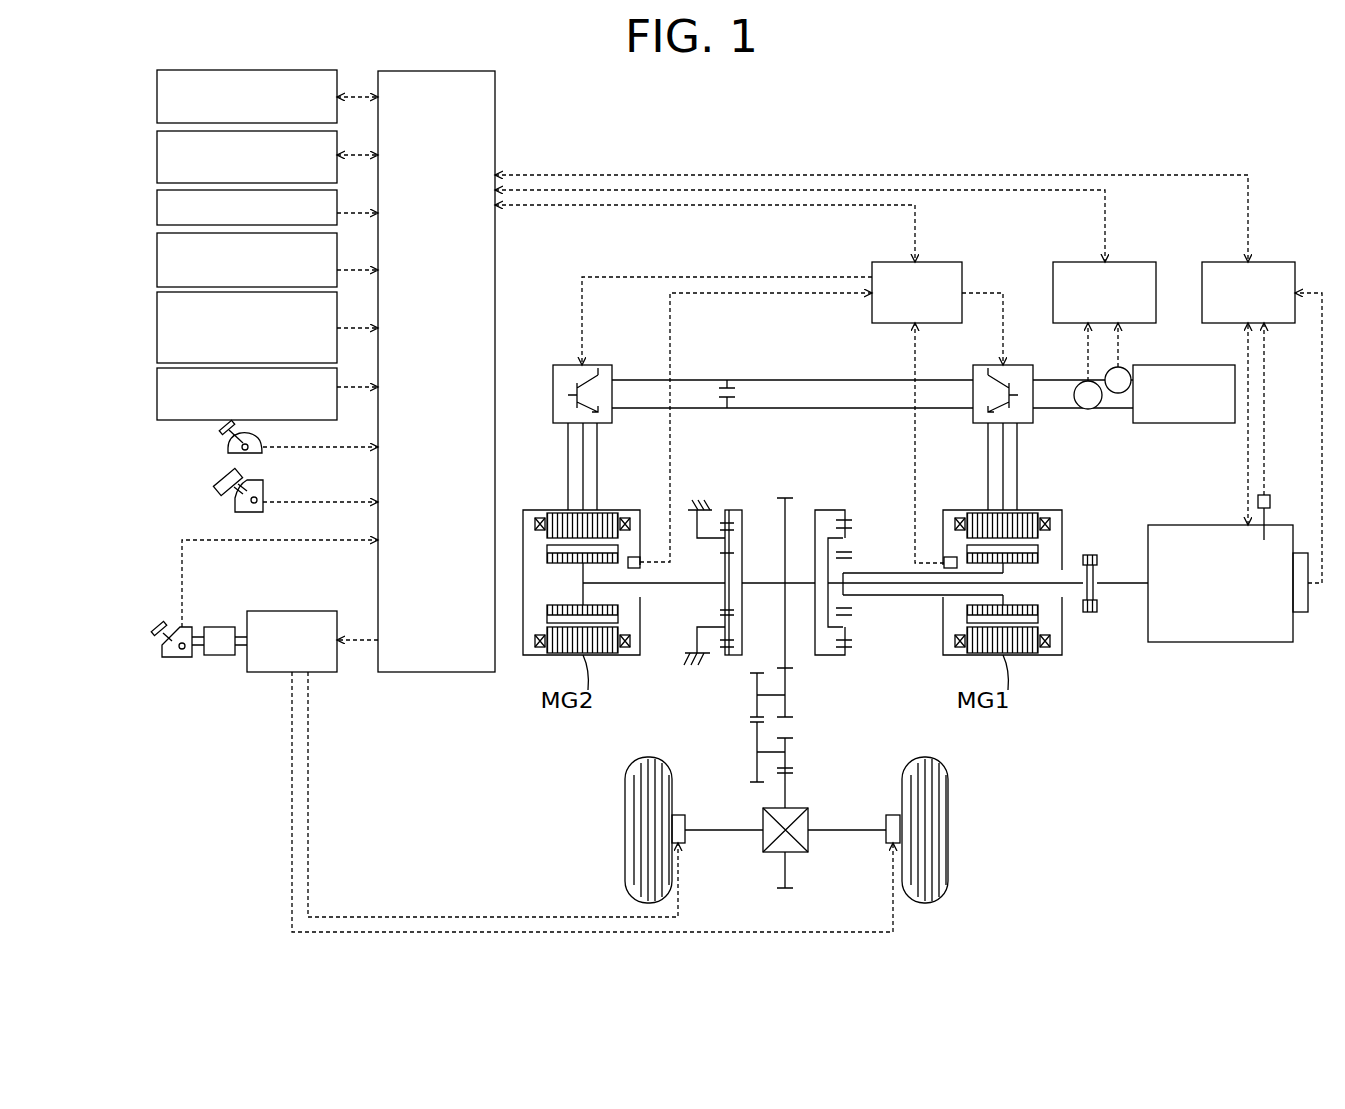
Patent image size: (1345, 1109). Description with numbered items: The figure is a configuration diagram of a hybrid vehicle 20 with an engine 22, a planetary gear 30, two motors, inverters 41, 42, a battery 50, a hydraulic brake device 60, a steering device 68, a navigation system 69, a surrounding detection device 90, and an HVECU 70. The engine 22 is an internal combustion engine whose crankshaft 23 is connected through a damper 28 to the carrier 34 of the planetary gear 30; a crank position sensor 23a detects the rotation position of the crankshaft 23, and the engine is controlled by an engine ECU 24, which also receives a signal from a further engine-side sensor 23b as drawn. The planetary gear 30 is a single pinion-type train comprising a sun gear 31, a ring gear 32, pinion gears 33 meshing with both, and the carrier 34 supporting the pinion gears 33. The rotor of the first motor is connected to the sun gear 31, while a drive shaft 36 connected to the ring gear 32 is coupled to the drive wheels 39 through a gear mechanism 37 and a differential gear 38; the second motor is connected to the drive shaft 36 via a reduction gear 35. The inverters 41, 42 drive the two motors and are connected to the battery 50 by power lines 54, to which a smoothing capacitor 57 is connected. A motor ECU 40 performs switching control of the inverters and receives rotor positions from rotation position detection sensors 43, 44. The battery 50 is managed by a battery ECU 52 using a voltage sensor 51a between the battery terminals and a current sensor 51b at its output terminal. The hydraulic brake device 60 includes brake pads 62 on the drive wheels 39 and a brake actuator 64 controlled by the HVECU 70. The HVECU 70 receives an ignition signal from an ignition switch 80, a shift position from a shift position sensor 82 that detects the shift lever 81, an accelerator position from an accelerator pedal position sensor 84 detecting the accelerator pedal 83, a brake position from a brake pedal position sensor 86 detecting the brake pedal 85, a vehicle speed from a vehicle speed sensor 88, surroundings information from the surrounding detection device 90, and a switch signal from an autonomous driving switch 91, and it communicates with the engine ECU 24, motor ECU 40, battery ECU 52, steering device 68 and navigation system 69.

The hybrid vehicle 20 is at (1003, 118).
The engine 22 is at (1220, 525).
The crankshaft 23 is at (1120, 583).
The crank position sensor 23a is at (1295, 612).
The engine sensor 23b is at (1272, 500).
The engine ECU 24 is at (1272, 262).
The damper 28 is at (1090, 553).
The planetary gear 30 is at (835, 493).
The sun gear 31 is at (845, 600).
The ring gear 32 is at (845, 650).
The pinion gears 33 is at (845, 622).
The carrier 34 is at (830, 567).
The reduction gear 35 is at (727, 495).
The drive shaft 36 is at (757, 583).
The gear mechanism 37 is at (803, 705).
The differential gear 38 is at (810, 808).
The drive wheels 39 is at (648, 757).
The motor ECU 40 is at (937, 262).
The inverter 41 is at (1015, 365).
The inverter 42 is at (597, 365).
The rotation position detection sensor 43 is at (950, 557).
The rotation position detection sensor 44 is at (635, 557).
The battery 50 is at (1175, 423).
The voltage sensor 51a is at (1088, 410).
The current sensor 51b is at (1118, 394).
The battery ECU 52 is at (1125, 262).
The power lines 54 is at (813, 408).
The smoothing capacitor 57 is at (722, 386).
The hydraulic brake device 60 is at (254, 597).
The brake pads 62 is at (682, 813).
The brake actuator 64 is at (292, 611).
The steering device 68 is at (157, 97).
The navigation system 69 is at (157, 156).
The HVECU 70 is at (437, 71).
The ignition switch 80 is at (157, 212).
The shift lever 81 is at (222, 425).
The shift position sensor 82 is at (228, 452).
The accelerator pedal 83 is at (215, 485).
The accelerator pedal position sensor 84 is at (237, 502).
The brake pedal 85 is at (152, 630).
The brake pedal position sensor 86 is at (160, 647).
The vehicle speed sensor 88 is at (157, 272).
The surrounding detection device 90 is at (157, 328).
The autonomous driving switch 91 is at (157, 385).